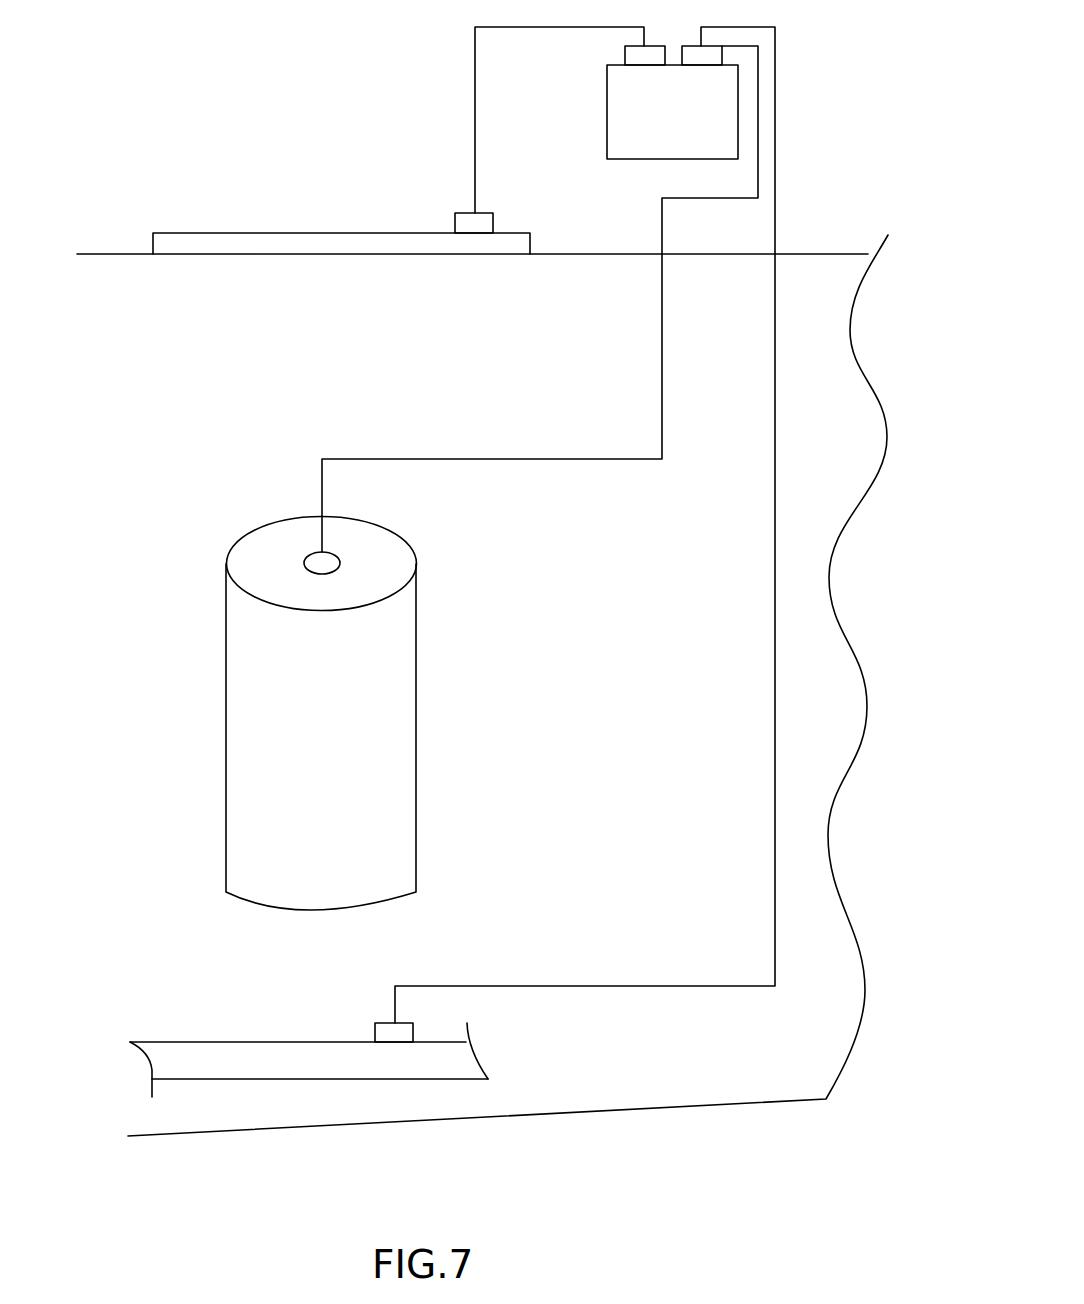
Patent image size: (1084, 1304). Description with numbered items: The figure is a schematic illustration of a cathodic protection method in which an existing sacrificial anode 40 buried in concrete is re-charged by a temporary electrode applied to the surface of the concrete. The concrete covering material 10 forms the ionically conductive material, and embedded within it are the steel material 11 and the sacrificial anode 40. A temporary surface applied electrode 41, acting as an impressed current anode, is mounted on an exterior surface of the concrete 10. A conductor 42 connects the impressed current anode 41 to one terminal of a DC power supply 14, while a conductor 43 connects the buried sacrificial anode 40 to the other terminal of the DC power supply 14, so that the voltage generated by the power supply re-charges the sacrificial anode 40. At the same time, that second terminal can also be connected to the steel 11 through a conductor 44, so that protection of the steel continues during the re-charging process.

The covering material 10 is at (783, 625).
The steel material 11 is at (227, 1060).
The DC power supply 14 is at (703, 125).
The sacrificial anode 40 is at (262, 695).
The surface applied electrode 41 is at (176, 238).
The conductor 42 is at (475, 121).
The conductor 43 is at (528, 458).
The conductor 44 is at (775, 650).